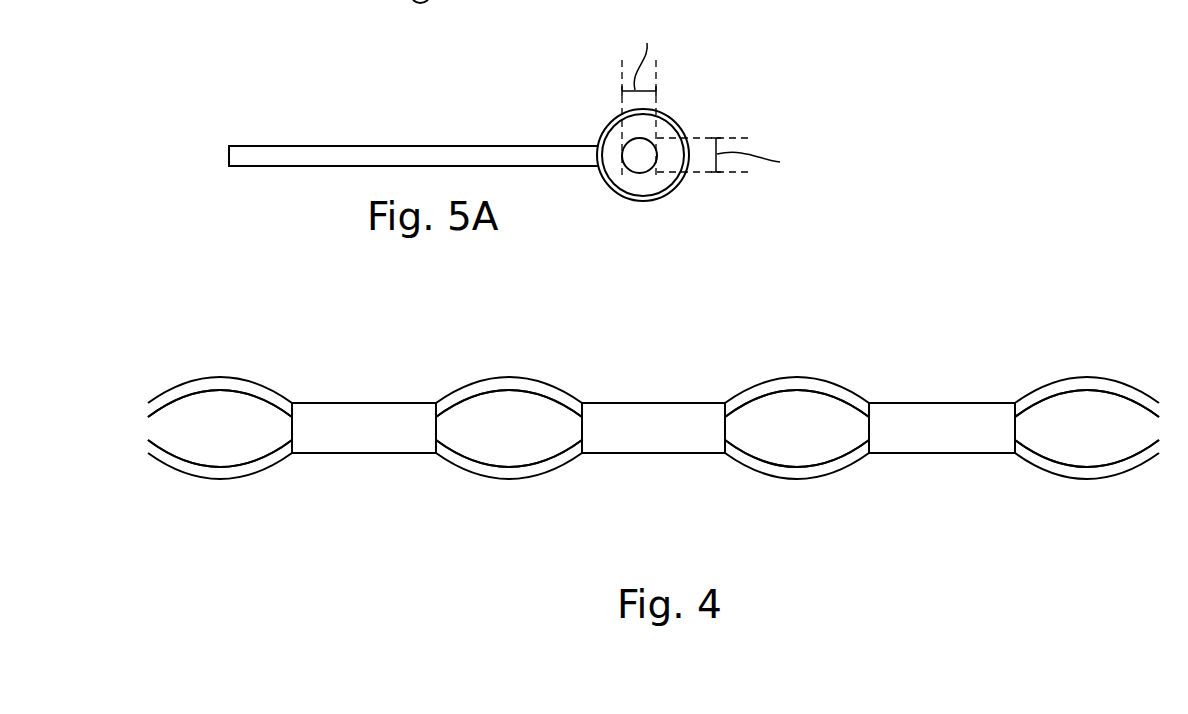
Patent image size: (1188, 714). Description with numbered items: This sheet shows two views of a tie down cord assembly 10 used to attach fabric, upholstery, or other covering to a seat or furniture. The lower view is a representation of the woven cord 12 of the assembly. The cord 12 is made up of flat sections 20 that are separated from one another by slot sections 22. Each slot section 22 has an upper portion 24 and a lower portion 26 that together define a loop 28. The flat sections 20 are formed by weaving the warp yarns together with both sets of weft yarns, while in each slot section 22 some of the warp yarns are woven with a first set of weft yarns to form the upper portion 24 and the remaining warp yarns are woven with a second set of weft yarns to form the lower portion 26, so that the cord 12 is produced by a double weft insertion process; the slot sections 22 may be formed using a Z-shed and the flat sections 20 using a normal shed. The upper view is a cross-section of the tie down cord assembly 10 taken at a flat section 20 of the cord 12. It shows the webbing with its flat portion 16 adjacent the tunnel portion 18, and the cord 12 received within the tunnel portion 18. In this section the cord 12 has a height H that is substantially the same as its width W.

In FIG. 5A, the tie down cord assembly 10 is at (528, 95).
In FIG. 4, the cord 12 is at (931, 260).
In FIG. 5A, the flat portion 16 is at (355, 150).
In FIG. 5A, the tunnel portion 18 is at (675, 128).
In FIG. 5A, the flat section 20 is at (632, 164).
In FIG. 4, the flat section 20 is at (363, 423).
In FIG. 4, the slot section 22 is at (191, 330).
In FIG. 4, the upper portion 24 is at (255, 390).
In FIG. 4, the lower portion 26 is at (273, 460).
In FIG. 4, the loop 28 is at (233, 450).